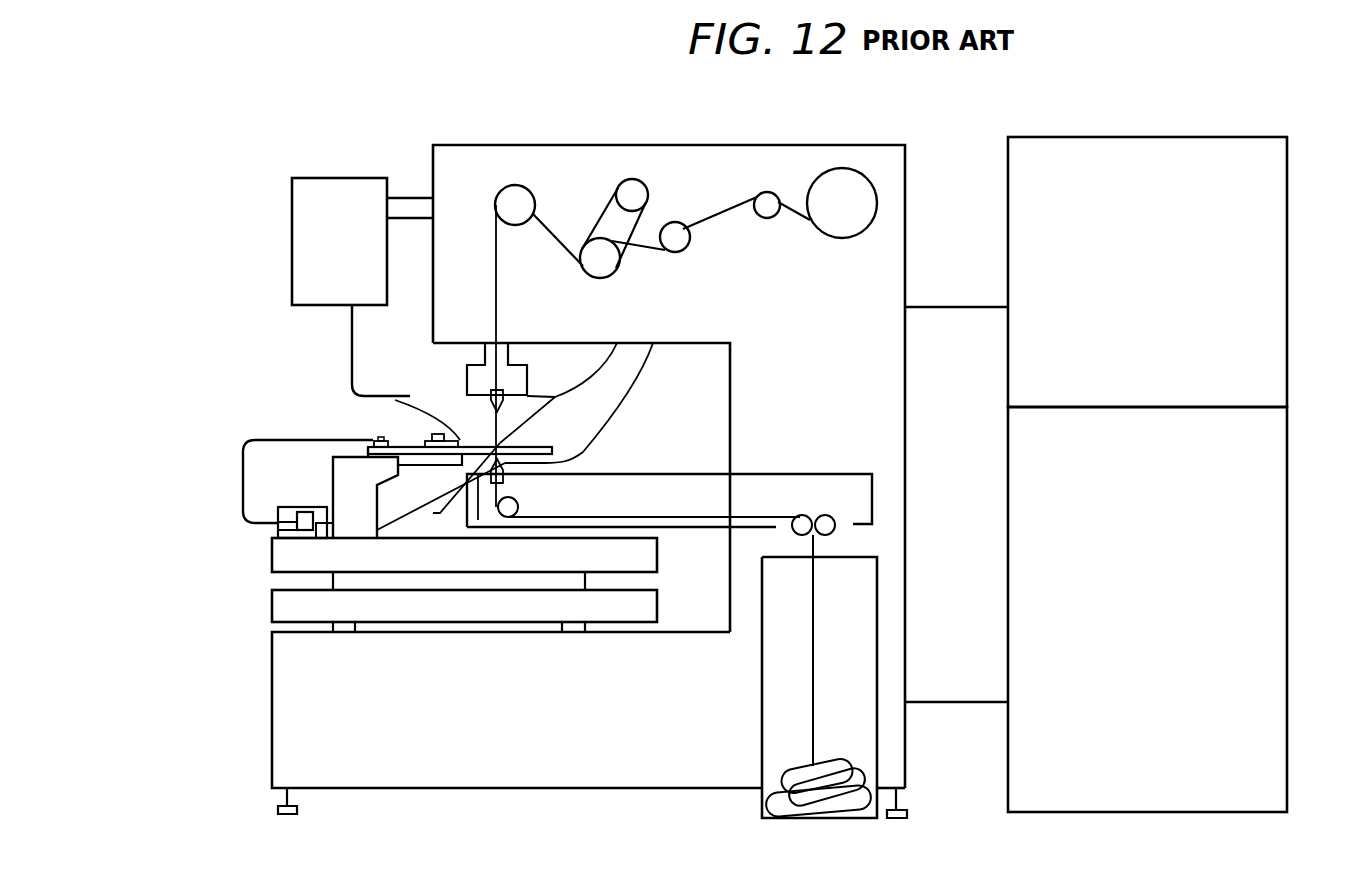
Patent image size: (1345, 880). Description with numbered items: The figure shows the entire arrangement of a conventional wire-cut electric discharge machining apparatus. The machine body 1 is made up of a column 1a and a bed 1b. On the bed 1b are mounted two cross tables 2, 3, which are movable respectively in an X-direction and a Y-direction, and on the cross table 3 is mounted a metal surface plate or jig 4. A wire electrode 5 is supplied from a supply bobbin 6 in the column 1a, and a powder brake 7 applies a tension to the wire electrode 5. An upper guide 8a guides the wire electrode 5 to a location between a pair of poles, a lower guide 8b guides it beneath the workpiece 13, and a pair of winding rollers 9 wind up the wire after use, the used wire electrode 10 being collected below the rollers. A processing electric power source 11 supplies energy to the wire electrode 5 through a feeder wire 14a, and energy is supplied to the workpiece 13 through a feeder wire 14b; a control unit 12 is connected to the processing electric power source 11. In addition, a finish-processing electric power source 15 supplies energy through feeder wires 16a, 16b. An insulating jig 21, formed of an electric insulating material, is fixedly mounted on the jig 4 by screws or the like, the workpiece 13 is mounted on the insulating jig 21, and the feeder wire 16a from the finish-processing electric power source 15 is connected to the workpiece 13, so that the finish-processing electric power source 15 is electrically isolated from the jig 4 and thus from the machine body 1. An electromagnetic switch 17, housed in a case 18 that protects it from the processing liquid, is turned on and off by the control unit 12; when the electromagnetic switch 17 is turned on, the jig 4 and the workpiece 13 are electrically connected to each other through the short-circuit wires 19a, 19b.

The machine body 1 is at (340, 143).
The column 1a is at (434, 142).
The bed 1b is at (278, 672).
The cross table 2 is at (652, 604).
The cross table 3 is at (652, 556).
The jig 4 is at (347, 472).
The wire electrode 5 is at (538, 212).
The supply bobbin 6 is at (837, 176).
The powder brake 7 is at (593, 265).
The upper guide 8a is at (490, 392).
The lower guide 8b is at (508, 482).
The winding rollers 9 is at (821, 515).
The used wire electrode 10 is at (780, 775).
The processing electric power source 11 is at (1277, 262).
The control unit 12 is at (1280, 457).
The workpiece 13 is at (485, 447).
The feeder wire 14a is at (555, 397).
The feeder wire 14b is at (433, 513).
The finish-processing electric power source 15 is at (307, 210).
The feeder wire 16a is at (407, 392).
The feeder wire 16b is at (395, 400).
The electromagnetic switch 17 is at (293, 517).
The case 18 is at (298, 505).
The short-circuit wire 19a is at (320, 538).
The short-circuit wire 19b is at (243, 498).
The insulating jig 21 is at (402, 452).